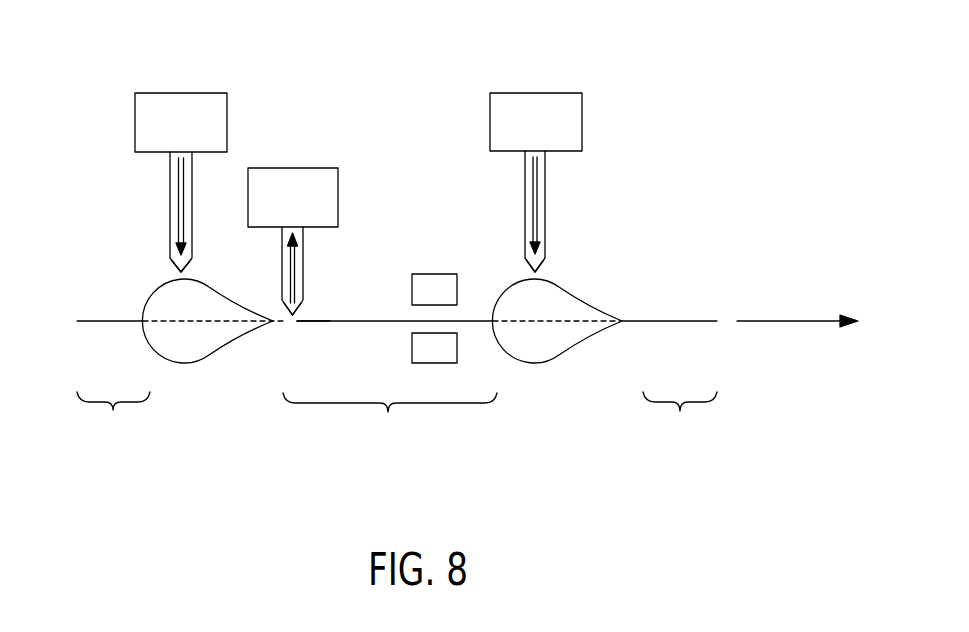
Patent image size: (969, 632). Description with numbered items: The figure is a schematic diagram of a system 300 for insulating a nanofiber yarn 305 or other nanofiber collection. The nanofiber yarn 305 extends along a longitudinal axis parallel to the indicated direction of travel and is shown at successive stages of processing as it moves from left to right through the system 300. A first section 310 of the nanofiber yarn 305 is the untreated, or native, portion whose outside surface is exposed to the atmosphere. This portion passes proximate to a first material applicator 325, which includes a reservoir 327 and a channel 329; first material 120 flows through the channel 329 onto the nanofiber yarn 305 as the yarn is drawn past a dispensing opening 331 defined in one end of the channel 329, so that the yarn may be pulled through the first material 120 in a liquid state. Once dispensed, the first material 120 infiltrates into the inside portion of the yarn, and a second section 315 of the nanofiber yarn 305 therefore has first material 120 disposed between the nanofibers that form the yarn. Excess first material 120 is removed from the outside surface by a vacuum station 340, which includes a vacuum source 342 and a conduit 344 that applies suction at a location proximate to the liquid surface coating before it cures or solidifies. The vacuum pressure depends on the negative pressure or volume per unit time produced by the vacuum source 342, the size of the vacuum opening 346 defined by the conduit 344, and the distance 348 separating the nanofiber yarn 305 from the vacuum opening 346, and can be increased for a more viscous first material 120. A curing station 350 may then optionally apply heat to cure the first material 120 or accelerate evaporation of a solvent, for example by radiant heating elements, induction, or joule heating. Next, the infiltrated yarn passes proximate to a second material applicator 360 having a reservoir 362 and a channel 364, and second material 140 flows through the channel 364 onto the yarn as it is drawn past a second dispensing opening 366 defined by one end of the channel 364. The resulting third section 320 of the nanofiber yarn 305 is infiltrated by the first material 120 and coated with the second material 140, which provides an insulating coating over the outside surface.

The system 300 is at (457, 379).
The nanofiber yarn 305 is at (103, 320).
The first section 310 is at (113, 419).
The second section 315 is at (390, 420).
The third section 320 is at (680, 419).
The first material applicator 325 is at (131, 154).
The reservoir 327 is at (167, 135).
The channel 329 is at (170, 205).
The dispensing opening 331 is at (177, 272).
The vacuum station 340 is at (307, 199).
The vacuum source 342 is at (279, 210).
The conduit 344 is at (304, 250).
The vacuum opening 346 is at (287, 310).
The distance 348 is at (320, 305).
The curing station 350 is at (420, 302).
The second material applicator 360 is at (503, 152).
The reservoir 362 is at (522, 135).
The channel 364 is at (525, 200).
The second dispensing opening 366 is at (540, 270).
The first material 120 is at (198, 363).
The second material 140 is at (545, 363).